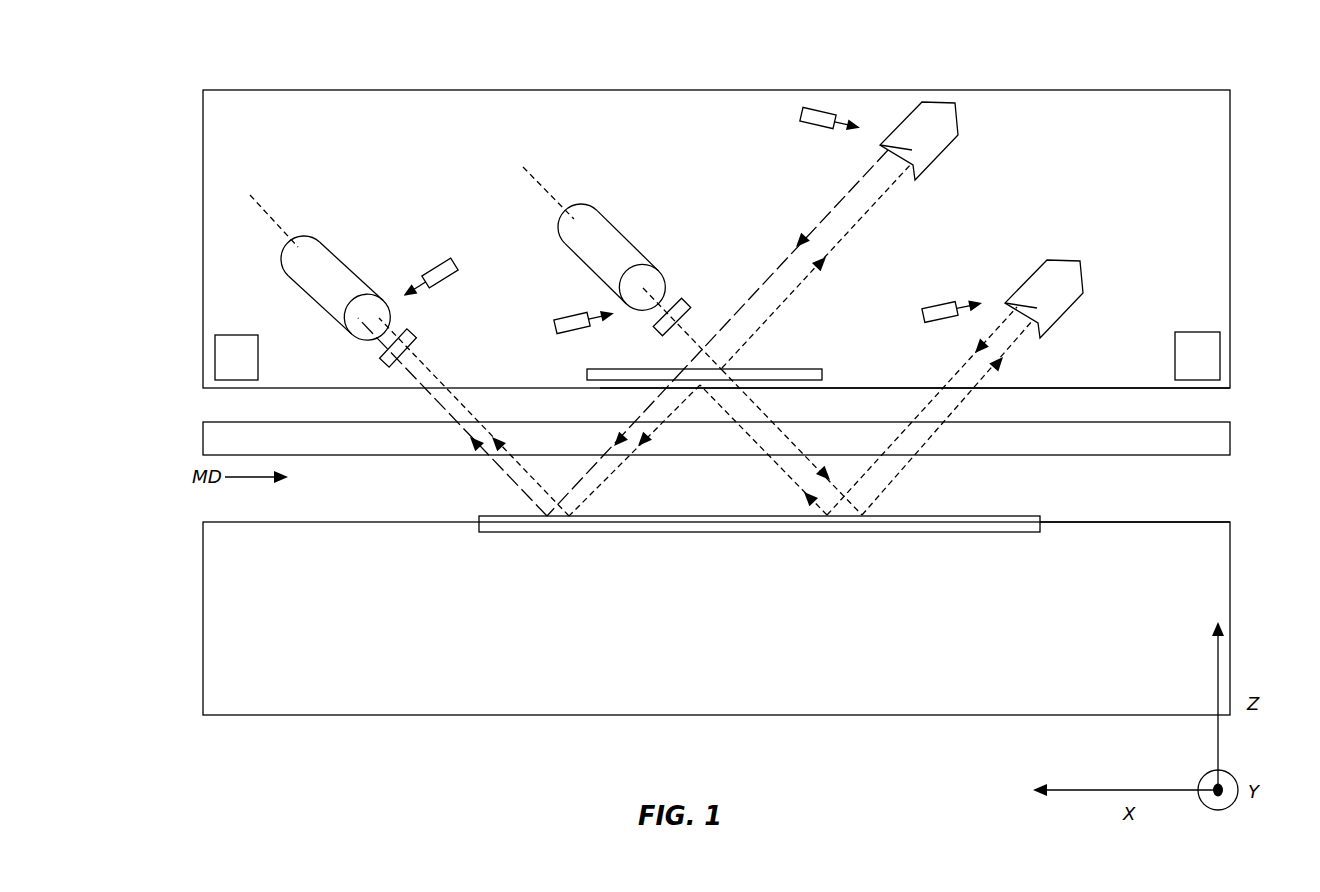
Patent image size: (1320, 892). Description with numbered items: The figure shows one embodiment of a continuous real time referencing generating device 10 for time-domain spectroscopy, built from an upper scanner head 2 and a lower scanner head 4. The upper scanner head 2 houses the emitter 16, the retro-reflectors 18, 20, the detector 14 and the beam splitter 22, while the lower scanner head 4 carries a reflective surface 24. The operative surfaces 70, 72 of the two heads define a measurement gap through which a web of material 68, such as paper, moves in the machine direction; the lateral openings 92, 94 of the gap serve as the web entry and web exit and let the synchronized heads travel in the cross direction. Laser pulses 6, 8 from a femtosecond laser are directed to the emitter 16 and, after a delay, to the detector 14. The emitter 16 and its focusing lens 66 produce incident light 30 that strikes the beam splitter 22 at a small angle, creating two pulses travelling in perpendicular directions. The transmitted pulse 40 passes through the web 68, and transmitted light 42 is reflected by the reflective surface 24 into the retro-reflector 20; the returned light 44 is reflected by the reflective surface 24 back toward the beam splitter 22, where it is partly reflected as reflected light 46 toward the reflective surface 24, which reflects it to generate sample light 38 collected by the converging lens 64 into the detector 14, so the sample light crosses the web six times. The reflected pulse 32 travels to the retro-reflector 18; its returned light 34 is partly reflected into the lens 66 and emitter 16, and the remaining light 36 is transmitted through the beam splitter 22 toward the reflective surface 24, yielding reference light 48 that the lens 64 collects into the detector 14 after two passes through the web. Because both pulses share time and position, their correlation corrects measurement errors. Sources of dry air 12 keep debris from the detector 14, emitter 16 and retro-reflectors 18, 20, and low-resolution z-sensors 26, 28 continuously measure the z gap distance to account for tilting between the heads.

The upper scanner head 2 is at (392, 131).
The lower scanner head 4 is at (392, 700).
The laser pulses 6 is at (533, 173).
The laser pulses 8 is at (258, 205).
The continuous real time referencing generating device 10 is at (183, 307).
The sources of dry air 12 is at (453, 262).
The detector 14 is at (352, 262).
The emitter 16 is at (623, 230).
The retro-reflector 18 is at (938, 155).
The retro-reflector 20 is at (1020, 282).
The beam splitter 22 is at (587, 373).
The reflective surface 24 is at (1040, 528).
The z-sensor 26 is at (258, 362).
The z-sensor 28 is at (1175, 360).
The incident light 30 is at (693, 343).
The reflected pulse 32 is at (847, 233).
The returned light 34 is at (840, 198).
The light 36 is at (642, 413).
The sample light 38 is at (458, 430).
The pulse 40 is at (768, 415).
The transmitted light 42 is at (955, 413).
The returned light 44 is at (783, 473).
The reflected light 46 is at (613, 468).
The reference light 48 is at (422, 362).
The converging lens 64 is at (412, 328).
The focusing lens 66 is at (687, 298).
The web of material 68 is at (1055, 455).
The operative surface 70 is at (1042, 388).
The operative surface 72 is at (1107, 522).
The lateral opening 92 is at (183, 515).
The lateral opening 94 is at (1247, 513).